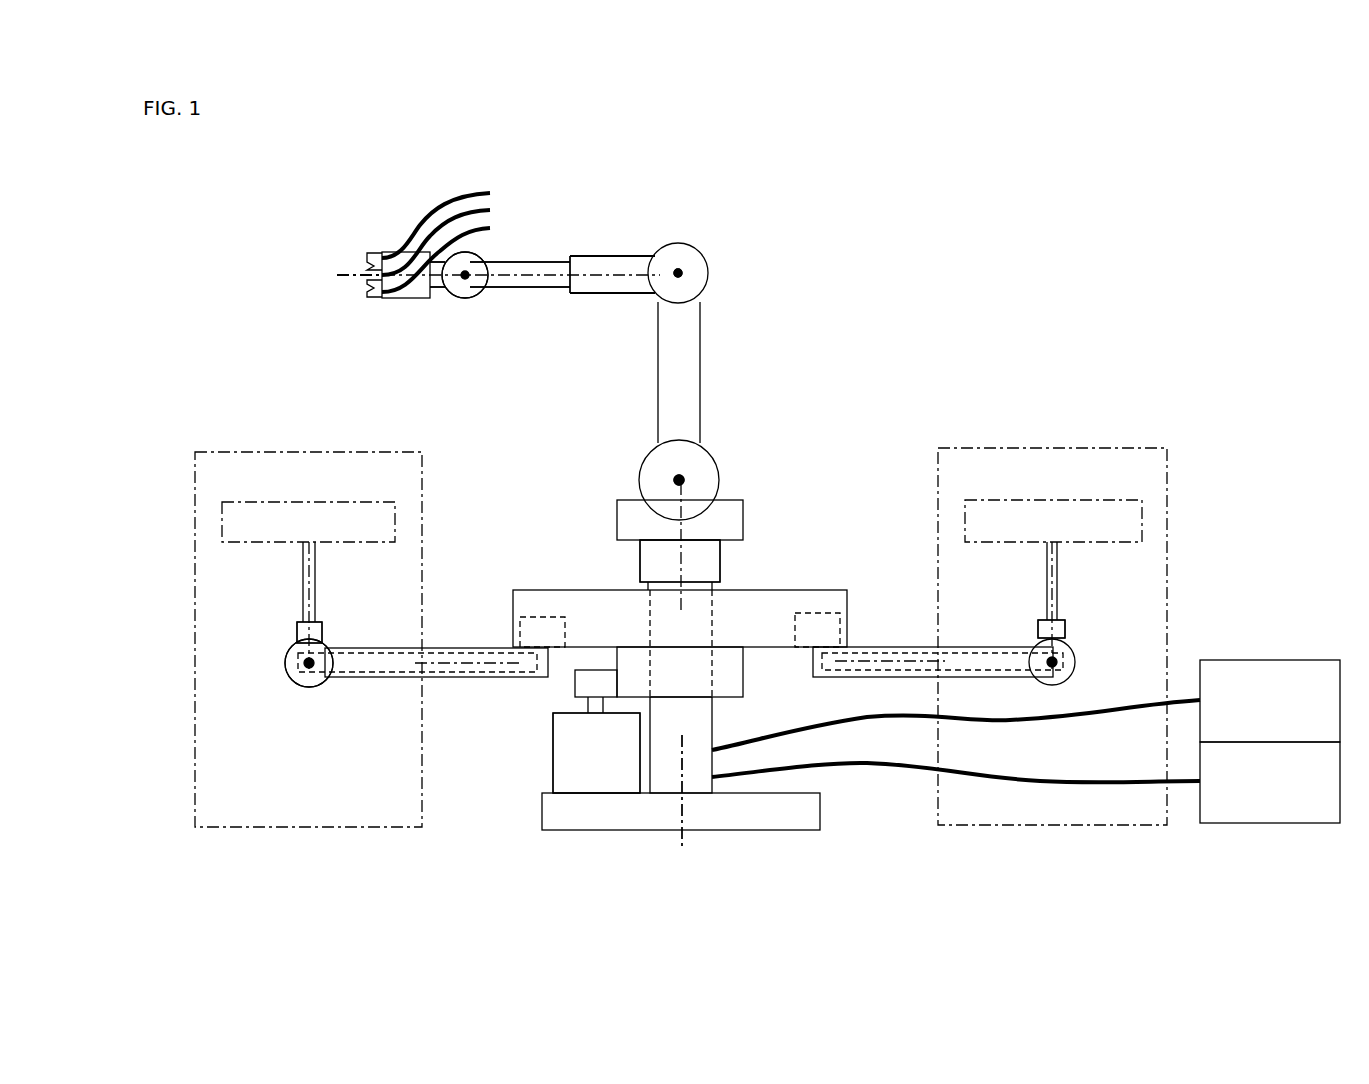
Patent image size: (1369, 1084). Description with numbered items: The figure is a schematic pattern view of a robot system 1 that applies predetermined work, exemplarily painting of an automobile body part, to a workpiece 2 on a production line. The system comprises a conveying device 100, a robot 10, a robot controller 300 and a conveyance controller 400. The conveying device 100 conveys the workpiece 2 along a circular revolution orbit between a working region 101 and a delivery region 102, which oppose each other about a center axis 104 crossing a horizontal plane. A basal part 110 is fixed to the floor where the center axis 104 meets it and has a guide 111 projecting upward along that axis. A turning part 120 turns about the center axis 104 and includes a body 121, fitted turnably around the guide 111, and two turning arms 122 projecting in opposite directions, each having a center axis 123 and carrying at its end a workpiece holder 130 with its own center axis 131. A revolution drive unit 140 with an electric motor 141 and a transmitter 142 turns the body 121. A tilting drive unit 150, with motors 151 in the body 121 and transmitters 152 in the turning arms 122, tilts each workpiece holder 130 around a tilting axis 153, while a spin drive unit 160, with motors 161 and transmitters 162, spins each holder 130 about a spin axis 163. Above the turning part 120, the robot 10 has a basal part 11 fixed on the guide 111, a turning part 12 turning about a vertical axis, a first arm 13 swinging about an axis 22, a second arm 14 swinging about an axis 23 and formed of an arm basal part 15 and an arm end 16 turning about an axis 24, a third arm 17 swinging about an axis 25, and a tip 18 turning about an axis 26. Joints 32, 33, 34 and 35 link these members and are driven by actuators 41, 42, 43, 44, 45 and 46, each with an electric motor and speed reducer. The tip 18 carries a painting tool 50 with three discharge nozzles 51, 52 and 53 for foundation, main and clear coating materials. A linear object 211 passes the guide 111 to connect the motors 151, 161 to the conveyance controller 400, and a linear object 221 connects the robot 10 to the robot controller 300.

The robot system 1 is at (197, 274).
The workpiece 2 is at (222, 520).
The robot 10 is at (727, 376).
The basal part 11 is at (708, 560).
The turning part 12 is at (735, 520).
The first arm 13 is at (700, 335).
The second arm 14 is at (608, 258).
The arm basal part 15 is at (628, 284).
The arm end 16 is at (535, 287).
The third arm 17 is at (438, 288).
The tip 18 is at (410, 298).
The axis 22 is at (677, 479).
The axis 23 is at (679, 272).
The axis 24 is at (585, 272).
The axis 25 is at (470, 282).
The axis 26 is at (337, 275).
The joint 32 is at (679, 480).
The joint 33 is at (678, 273).
The joint 34 is at (612, 274).
The joint 35 is at (465, 275).
The actuator 41 is at (680, 561).
The actuator 42 is at (704, 470).
The actuator 43 is at (664, 245).
The actuator 44 is at (612, 274).
The actuator 45 is at (485, 256).
The actuator 46 is at (437, 274).
The painting tool 50 is at (338, 210).
The discharge nozzle 51 is at (375, 258).
The discharge nozzle 52 is at (370, 283).
The discharge nozzle 53 is at (375, 297).
The conveying device 100 is at (835, 508).
The working region 101 is at (258, 450).
The delivery region 102 is at (1090, 448).
The center axis 104 is at (700, 745).
The basal part 110 is at (552, 846).
The guide 111 is at (696, 775).
The turning part 120 is at (437, 712).
The body 121 is at (540, 607).
The turning arm 122 is at (465, 680).
The center axis 123 is at (470, 662).
The workpiece holder 130 is at (280, 618).
The center axis 131 is at (310, 610).
The revolution drive unit 140 is at (540, 758).
The electric motor 141 is at (592, 775).
The transmitter 142 is at (585, 682).
The tilting drive unit 150 is at (268, 680).
The electric motor 151 is at (525, 630).
The transmitter 152 is at (388, 675).
The tilting axis 153 is at (306, 668).
The spin drive unit 160 is at (1085, 612).
The electric motor 161 is at (815, 615).
The transmitter 162 is at (882, 660).
The spin axis 163 is at (1045, 605).
The linear object 211 is at (870, 785).
The linear object 221 is at (1182, 698).
The robot controller 300 is at (1276, 658).
The conveyance controller 400 is at (1265, 825).